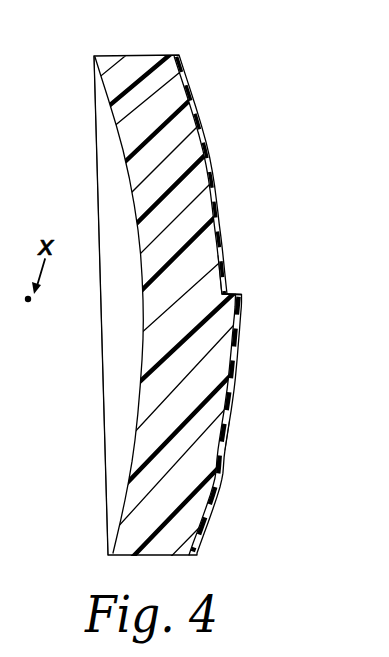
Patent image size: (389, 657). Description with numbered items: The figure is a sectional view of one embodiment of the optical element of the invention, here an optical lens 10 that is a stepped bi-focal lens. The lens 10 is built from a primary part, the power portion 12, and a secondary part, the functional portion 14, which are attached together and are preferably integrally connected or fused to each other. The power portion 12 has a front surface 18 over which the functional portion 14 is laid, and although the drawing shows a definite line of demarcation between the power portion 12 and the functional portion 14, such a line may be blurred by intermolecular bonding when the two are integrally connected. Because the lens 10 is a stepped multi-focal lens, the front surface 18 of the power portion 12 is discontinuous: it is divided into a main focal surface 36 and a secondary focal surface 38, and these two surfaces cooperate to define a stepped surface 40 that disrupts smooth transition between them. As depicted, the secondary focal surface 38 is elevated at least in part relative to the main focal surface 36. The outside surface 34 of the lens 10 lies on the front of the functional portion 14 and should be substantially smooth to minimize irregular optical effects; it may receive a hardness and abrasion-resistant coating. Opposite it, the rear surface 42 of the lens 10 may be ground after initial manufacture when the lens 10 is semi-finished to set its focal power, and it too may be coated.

The optical lens 10 is at (163, 326).
The power portion 12 is at (130, 67).
The functional portion 14 is at (180, 56).
The front surface 18 is at (222, 162).
The main focal surface 36 is at (215, 220).
The secondary focal surface 38 is at (236, 356).
The stepped surface 40 is at (244, 286).
The outside surface 34 is at (247, 420).
The rear surface 42 is at (140, 361).